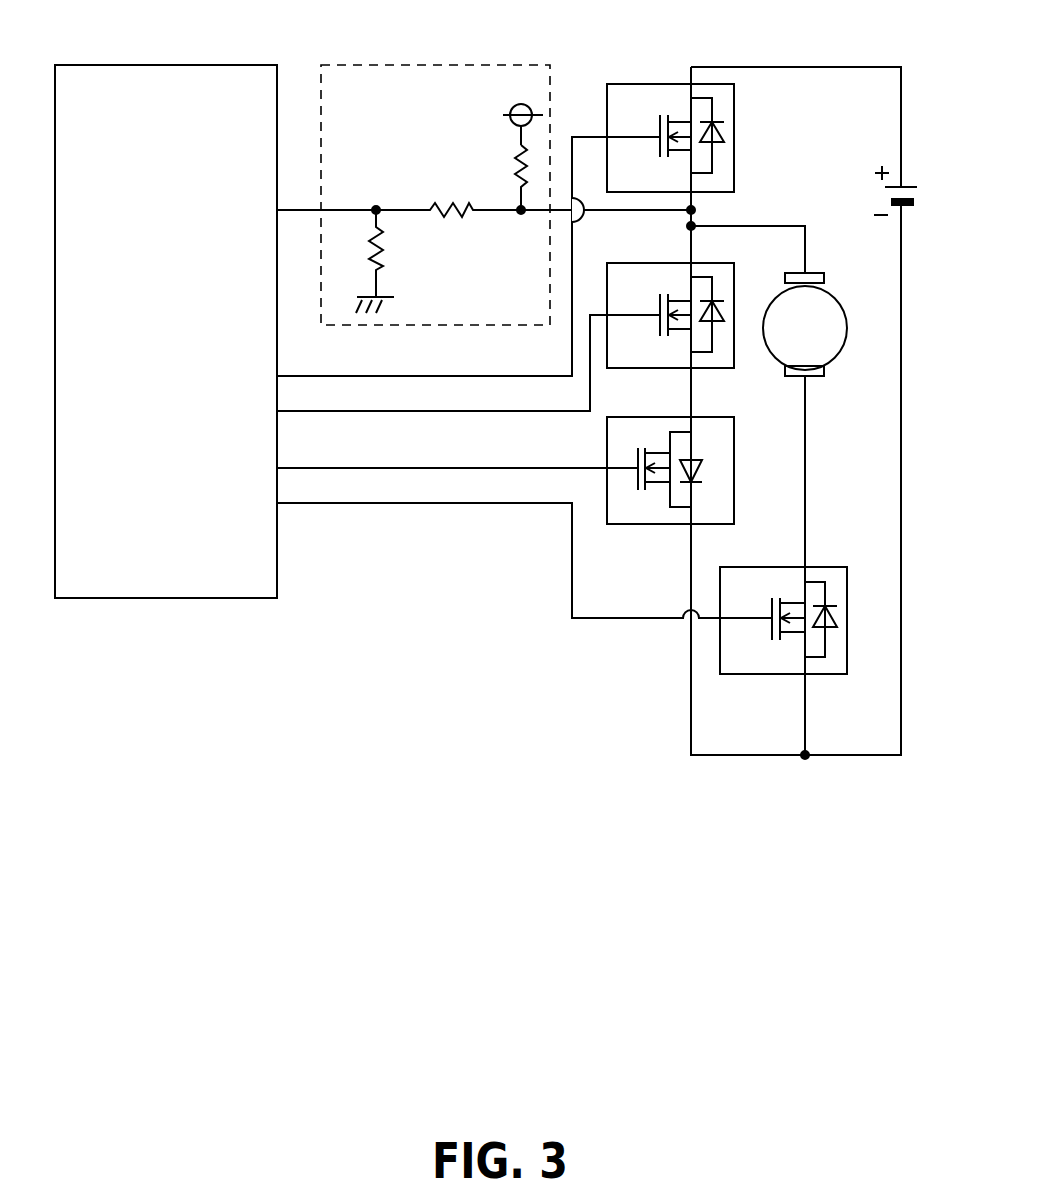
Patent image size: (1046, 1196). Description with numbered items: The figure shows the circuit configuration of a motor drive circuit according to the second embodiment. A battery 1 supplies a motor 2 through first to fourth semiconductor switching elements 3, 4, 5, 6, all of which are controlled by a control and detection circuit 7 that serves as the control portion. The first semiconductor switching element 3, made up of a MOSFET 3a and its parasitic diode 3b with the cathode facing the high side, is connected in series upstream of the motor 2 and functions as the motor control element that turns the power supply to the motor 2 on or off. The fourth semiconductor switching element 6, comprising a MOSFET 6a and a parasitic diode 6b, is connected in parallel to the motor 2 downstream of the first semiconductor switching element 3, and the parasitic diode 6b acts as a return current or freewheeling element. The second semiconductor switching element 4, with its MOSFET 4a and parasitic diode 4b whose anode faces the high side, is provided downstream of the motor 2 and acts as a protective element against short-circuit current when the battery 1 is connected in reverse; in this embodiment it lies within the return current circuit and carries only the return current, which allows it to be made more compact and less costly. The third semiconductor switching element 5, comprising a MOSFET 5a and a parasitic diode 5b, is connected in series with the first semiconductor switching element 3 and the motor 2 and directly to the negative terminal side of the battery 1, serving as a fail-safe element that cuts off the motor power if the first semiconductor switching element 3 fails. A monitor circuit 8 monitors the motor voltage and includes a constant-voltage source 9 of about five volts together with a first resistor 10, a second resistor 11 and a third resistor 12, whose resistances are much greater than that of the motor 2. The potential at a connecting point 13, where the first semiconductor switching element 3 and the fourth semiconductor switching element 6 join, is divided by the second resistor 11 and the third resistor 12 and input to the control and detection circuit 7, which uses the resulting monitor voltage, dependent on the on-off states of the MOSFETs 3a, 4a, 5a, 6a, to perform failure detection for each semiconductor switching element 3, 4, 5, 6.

The battery 1 is at (906, 186).
The motor 2 is at (838, 295).
The first semiconductor switching element 3 is at (686, 117).
The MOSFET 3a is at (658, 148).
The parasitic diode 3b is at (722, 133).
The second semiconductor switching element 4 is at (704, 470).
The MOSFET 4a is at (645, 480).
The parasitic diode 4b is at (700, 470).
The third semiconductor switching element 5 is at (807, 656).
The MOSFET 5a is at (770, 629).
The parasitic diode 5b is at (835, 615).
The fourth semiconductor switching element 6 is at (679, 306).
The MOSFET 6a is at (658, 326).
The parasitic diode 6b is at (718, 330).
The control and detection circuit 7 is at (205, 65).
The monitor circuit 8 is at (433, 66).
The constant-voltage source 9 is at (512, 108).
The first resistor 10 is at (517, 140).
The second resistor 11 is at (462, 214).
The third resistor 12 is at (386, 266).
The connecting point 13 is at (698, 210).